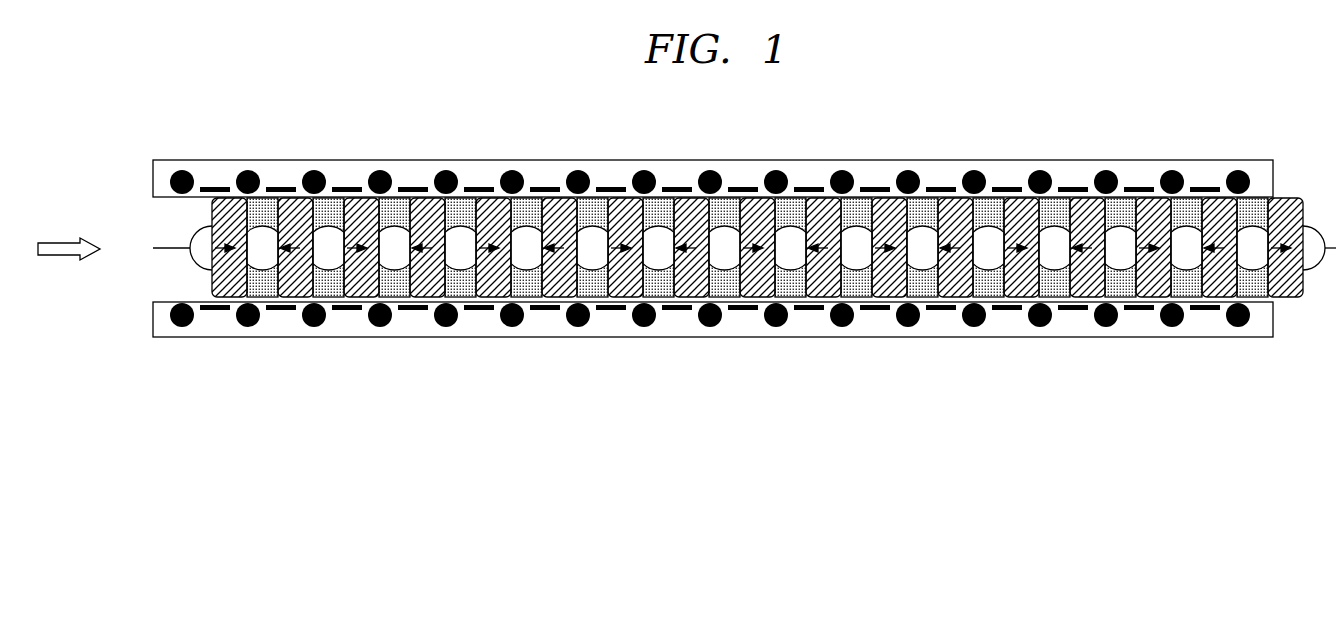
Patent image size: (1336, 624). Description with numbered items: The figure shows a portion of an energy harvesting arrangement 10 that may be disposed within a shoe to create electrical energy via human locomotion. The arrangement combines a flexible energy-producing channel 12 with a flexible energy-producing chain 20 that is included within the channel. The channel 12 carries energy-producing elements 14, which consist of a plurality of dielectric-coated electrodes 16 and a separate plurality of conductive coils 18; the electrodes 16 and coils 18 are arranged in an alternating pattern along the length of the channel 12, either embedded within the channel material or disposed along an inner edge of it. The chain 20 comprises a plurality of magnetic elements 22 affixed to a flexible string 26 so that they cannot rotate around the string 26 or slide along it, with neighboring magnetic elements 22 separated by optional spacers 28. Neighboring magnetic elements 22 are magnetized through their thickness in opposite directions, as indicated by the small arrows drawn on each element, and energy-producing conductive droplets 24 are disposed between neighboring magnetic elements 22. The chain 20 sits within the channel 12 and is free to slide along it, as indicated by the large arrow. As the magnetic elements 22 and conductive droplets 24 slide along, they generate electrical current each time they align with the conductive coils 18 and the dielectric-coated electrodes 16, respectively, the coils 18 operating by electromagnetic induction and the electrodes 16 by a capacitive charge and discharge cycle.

The energy harvesting arrangement 10 is at (1198, 108).
The flexible energy-producing channel 12 is at (793, 172).
The energy-producing elements 14 is at (1003, 182).
The dielectric-coated electrodes 16 is at (217, 188).
The conductive coils 18 is at (175, 172).
The flexible energy-producing chain 20 is at (133, 208).
The magnetic elements 22 is at (235, 290).
The energy-producing conductive droplets 24 is at (330, 290).
The flexible string 26 is at (167, 248).
The spacers 28 is at (393, 250).